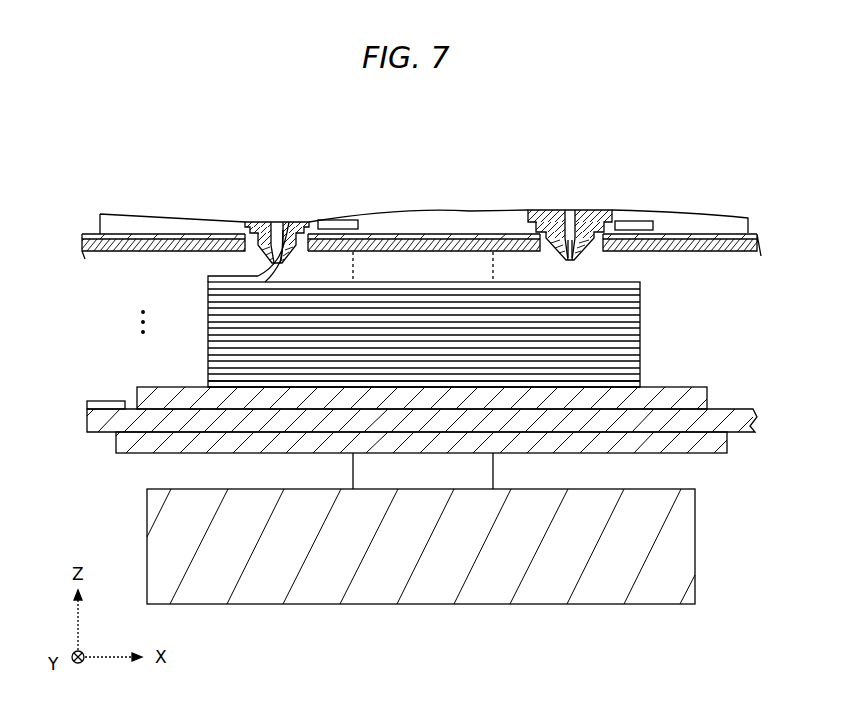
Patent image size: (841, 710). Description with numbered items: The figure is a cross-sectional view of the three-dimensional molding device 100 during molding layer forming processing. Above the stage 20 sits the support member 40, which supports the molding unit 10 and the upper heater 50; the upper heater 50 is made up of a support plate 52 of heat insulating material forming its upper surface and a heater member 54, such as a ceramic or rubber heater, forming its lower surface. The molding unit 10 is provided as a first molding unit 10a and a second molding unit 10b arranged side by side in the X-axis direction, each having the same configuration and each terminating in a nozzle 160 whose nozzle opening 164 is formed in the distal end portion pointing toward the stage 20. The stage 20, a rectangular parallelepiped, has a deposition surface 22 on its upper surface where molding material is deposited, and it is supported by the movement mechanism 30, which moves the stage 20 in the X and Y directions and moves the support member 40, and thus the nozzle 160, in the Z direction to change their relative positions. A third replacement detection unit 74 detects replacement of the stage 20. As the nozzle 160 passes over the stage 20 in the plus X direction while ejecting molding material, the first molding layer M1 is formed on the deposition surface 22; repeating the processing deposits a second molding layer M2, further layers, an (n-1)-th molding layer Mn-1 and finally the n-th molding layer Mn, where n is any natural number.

The three-dimensional molding device 100 is at (716, 142).
The support member 40 is at (735, 227).
The upper heater 50 is at (168, 179).
The heater member 54 is at (128, 245).
The support plate 52 is at (163, 243).
The molding unit 10 is at (421, 196).
The first molding unit 10a is at (277, 210).
The second molding unit 10b is at (571, 200).
The nozzle 160 is at (266, 224).
The nozzle opening 164 is at (279, 262).
The n-th molding layer Mn is at (205, 279).
The (n-1)-th molding layer Mn-1 is at (208, 289).
The second molding layer M2 is at (212, 380).
The first molding layer M1 is at (212, 388).
The deposition surface 22 is at (585, 388).
The stage 20 is at (693, 400).
The movement mechanism 30 is at (751, 456).
The third replacement detection unit 74 is at (88, 404).